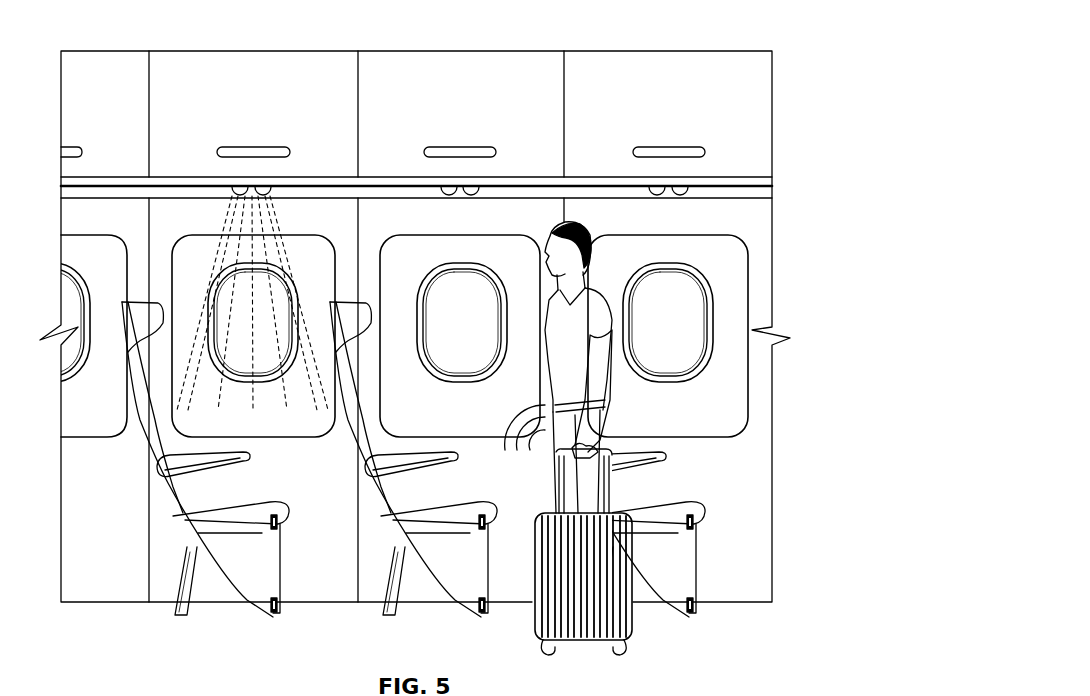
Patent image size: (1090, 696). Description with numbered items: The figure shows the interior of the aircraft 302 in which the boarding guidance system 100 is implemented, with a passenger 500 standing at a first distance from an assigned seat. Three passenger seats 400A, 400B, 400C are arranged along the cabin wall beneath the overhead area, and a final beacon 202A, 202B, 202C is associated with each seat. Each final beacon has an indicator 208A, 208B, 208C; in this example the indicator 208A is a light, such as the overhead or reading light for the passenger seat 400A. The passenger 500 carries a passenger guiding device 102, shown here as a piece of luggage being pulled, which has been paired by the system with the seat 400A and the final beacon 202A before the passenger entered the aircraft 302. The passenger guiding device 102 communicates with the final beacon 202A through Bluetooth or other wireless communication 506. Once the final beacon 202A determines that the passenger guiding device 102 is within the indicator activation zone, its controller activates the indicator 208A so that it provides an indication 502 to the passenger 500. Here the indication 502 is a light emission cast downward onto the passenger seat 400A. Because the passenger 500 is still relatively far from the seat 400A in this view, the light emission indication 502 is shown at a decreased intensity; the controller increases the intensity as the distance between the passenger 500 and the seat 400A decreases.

The boarding guidance system 100 is at (776, 43).
The aircraft 302 is at (757, 460).
The final beacon 202A is at (260, 119).
The final beacon 202B is at (467, 119).
The final beacon 202C is at (675, 119).
The indicator 208A is at (265, 185).
The indicator 208B is at (473, 185).
The indicator 208C is at (682, 185).
The indication 502 is at (225, 232).
The passenger 500 is at (578, 228).
The wireless communication 506 is at (508, 422).
The passenger guiding device 102 is at (556, 458).
The passenger seat 400A is at (272, 620).
The passenger seat 400B is at (470, 614).
The passenger seat 400C is at (683, 612).